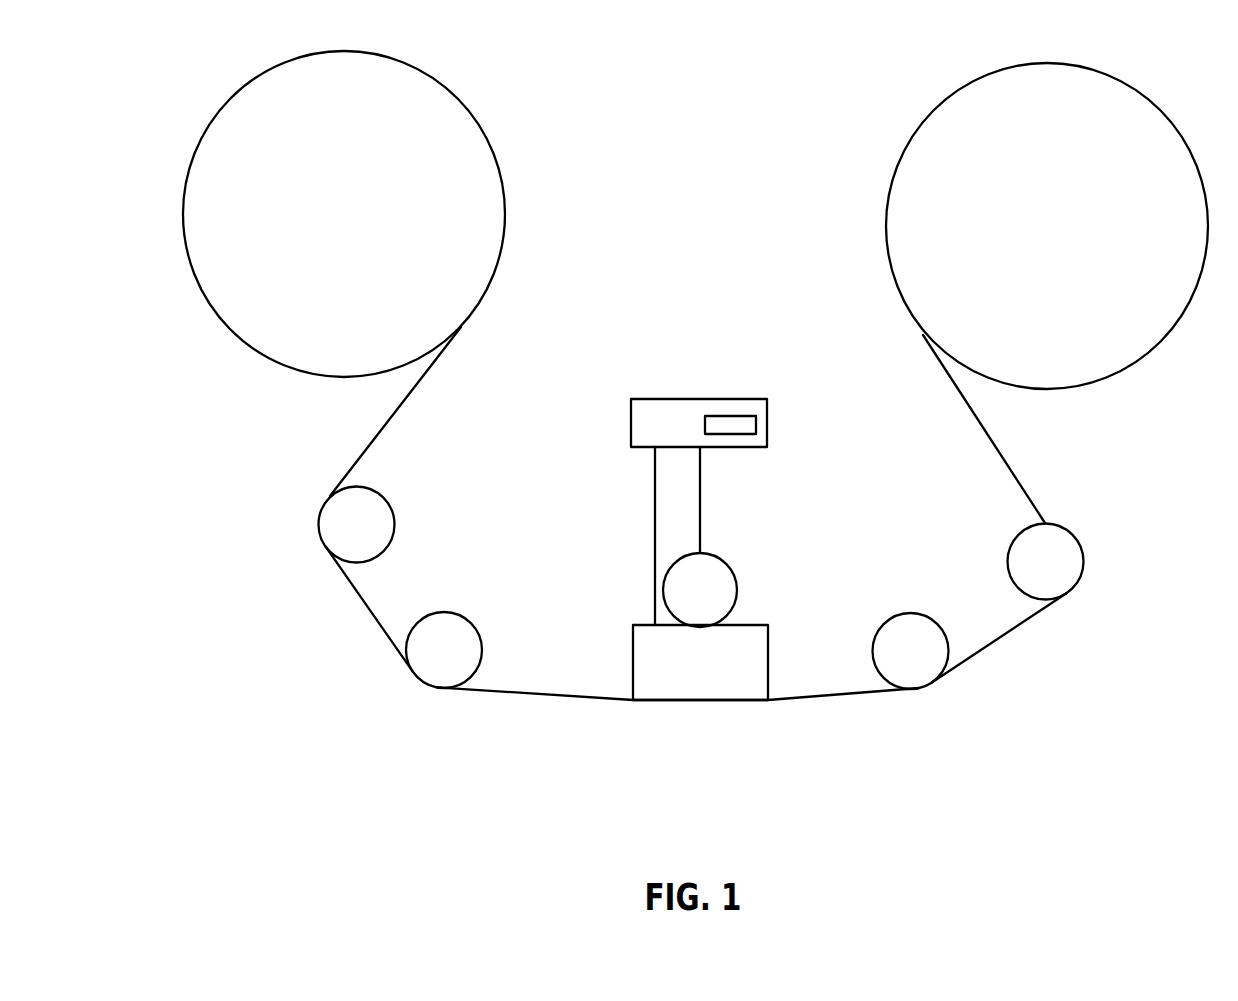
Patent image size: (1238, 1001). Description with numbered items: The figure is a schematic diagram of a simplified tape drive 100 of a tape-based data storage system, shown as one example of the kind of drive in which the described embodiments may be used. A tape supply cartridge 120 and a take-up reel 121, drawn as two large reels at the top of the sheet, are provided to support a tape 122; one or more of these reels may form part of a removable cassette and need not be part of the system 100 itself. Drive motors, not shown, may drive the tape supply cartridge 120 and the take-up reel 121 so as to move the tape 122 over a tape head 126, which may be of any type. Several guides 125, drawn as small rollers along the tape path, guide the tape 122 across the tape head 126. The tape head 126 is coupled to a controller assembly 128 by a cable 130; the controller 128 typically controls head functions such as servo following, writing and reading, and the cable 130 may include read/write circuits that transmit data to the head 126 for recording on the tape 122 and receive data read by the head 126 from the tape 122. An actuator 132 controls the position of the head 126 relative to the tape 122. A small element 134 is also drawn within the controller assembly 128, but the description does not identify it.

The tape drive 100 is at (298, 441).
The tape supply cartridge 120 is at (502, 184).
The take-up reel 121 is at (1148, 355).
The tape 122 is at (542, 695).
The guides 125 is at (443, 612).
The tape head 126 is at (769, 662).
The controller assembly 128 is at (698, 399).
The cable 130 is at (655, 587).
The actuator 132 is at (727, 560).
The sensor 134 is at (743, 416).